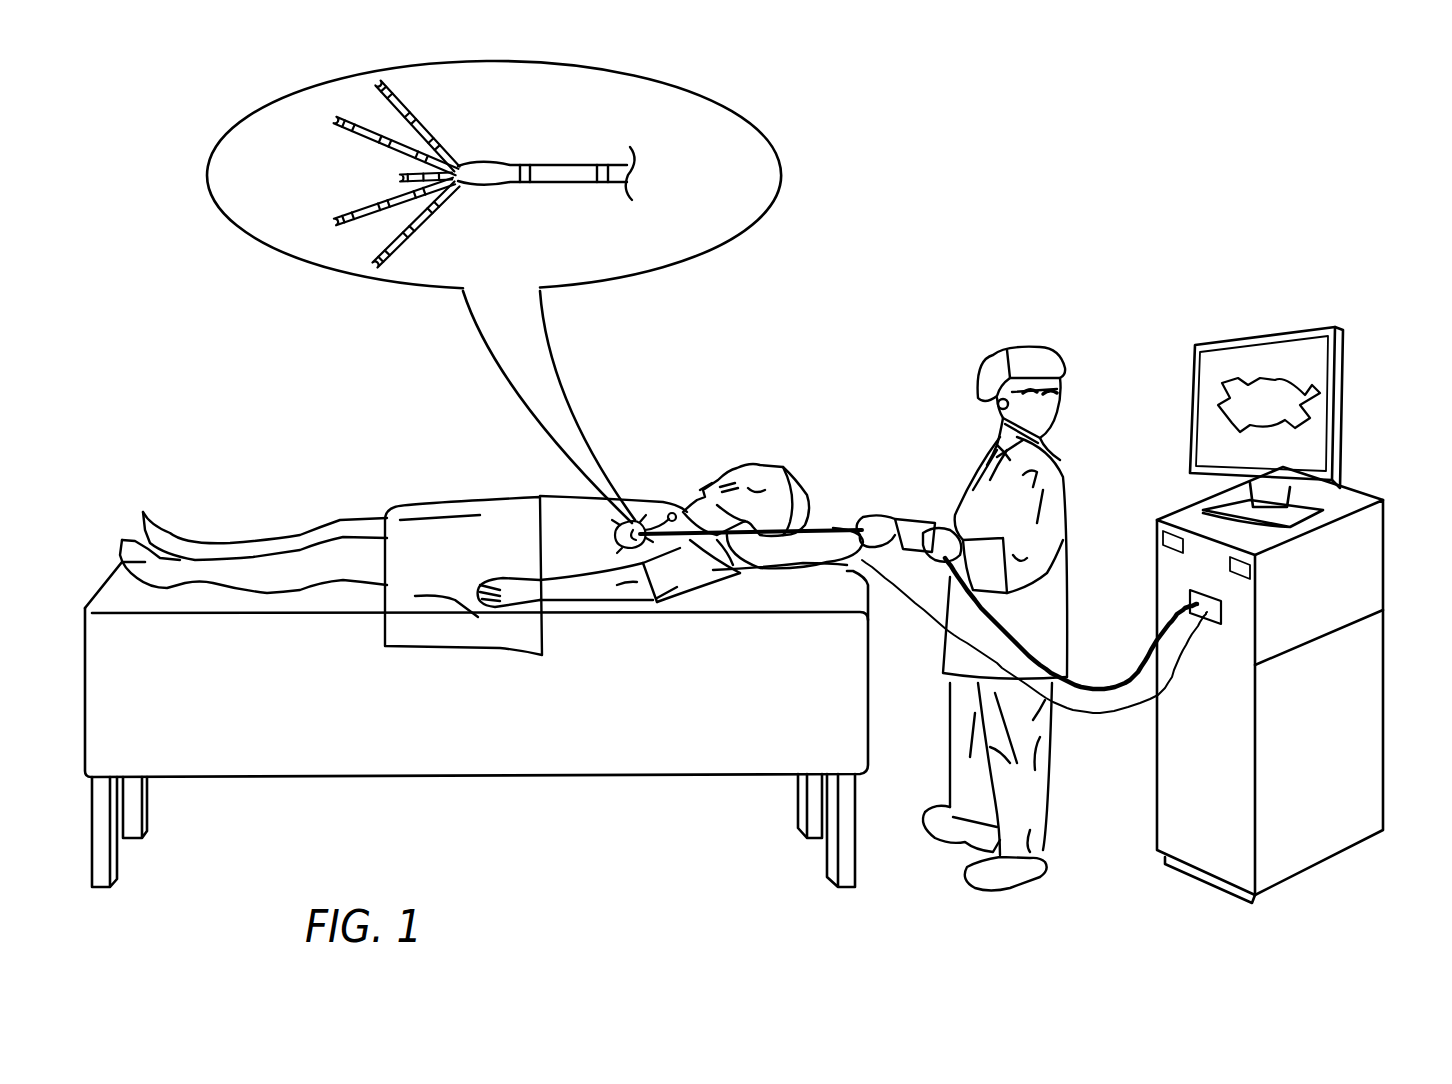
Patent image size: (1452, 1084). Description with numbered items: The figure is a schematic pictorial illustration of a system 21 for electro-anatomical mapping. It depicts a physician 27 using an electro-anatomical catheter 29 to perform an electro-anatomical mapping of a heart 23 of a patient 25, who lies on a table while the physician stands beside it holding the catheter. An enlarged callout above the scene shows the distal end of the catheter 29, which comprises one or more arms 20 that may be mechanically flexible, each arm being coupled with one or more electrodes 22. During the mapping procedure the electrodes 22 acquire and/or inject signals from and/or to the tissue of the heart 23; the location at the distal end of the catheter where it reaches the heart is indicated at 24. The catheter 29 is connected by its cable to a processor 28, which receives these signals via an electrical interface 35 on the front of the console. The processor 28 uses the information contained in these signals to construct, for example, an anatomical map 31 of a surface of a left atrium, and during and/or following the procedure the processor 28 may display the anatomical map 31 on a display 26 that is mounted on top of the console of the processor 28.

The arms 20 is at (418, 110).
The system 21 is at (273, 407).
The electrodes 22 is at (392, 266).
The heart 23 is at (628, 520).
The catheter distal end 24 is at (660, 518).
The patient 25 is at (788, 465).
The display 26 is at (1346, 362).
The physician 27 is at (1050, 352).
The processor 28 is at (1385, 550).
The electro-anatomical catheter 29 is at (853, 518).
The anatomical map 31 is at (1275, 392).
The electrical interface 35 is at (1210, 616).